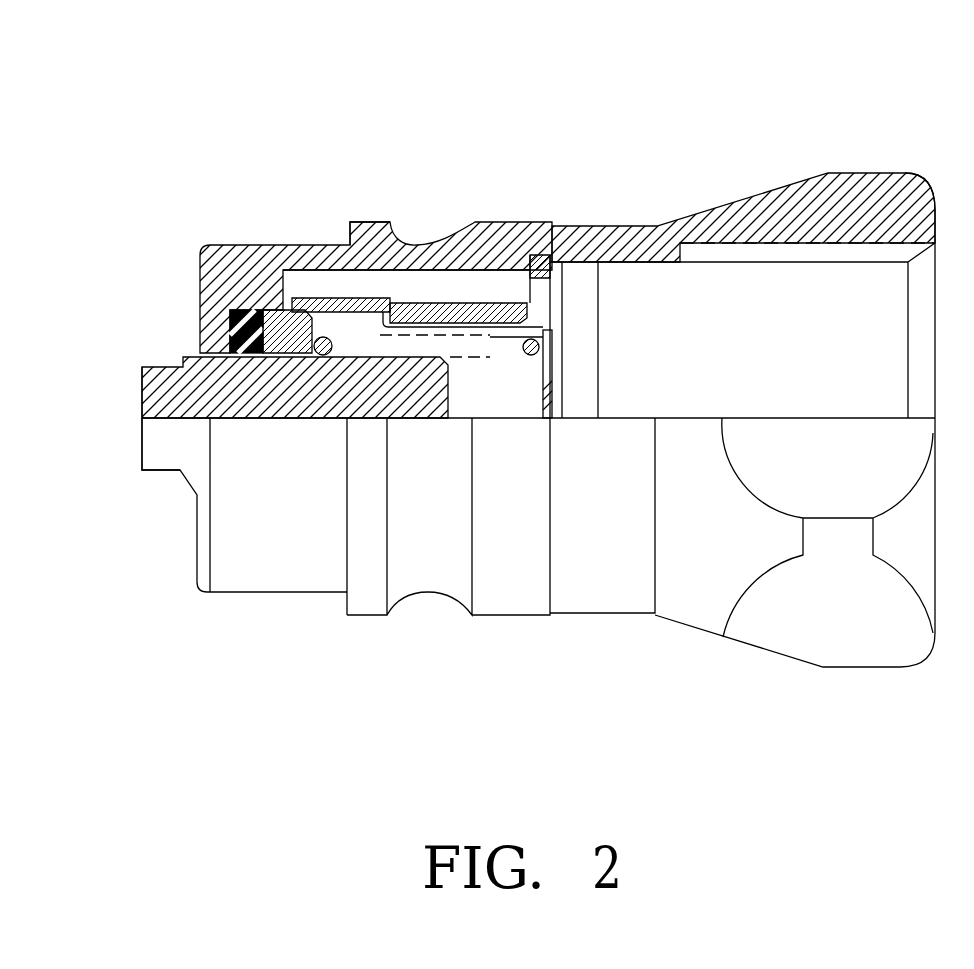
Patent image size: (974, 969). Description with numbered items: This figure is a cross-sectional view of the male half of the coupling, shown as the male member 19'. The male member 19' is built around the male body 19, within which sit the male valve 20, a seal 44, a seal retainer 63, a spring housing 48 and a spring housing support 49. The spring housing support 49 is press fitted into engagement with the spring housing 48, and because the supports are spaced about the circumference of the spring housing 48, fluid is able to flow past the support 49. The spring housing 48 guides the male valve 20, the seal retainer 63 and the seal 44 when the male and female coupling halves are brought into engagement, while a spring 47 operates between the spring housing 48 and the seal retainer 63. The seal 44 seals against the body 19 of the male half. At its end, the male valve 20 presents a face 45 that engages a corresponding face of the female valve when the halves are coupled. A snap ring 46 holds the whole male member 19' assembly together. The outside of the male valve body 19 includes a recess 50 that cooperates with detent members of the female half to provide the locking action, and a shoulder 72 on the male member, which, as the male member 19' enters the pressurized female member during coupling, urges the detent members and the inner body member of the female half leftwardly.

The male body 19 is at (742, 252).
The male member 19' is at (910, 120).
The male valve 20 is at (203, 367).
The seal 44 is at (237, 312).
The face 45 is at (140, 397).
The snap ring 46 is at (597, 258).
The spring 47 is at (510, 283).
The spring housing 48 is at (552, 353).
The spring housing support 49 is at (423, 347).
The recess 50 is at (420, 224).
The seal retainer 63 is at (293, 327).
The shoulder 72 is at (350, 233).